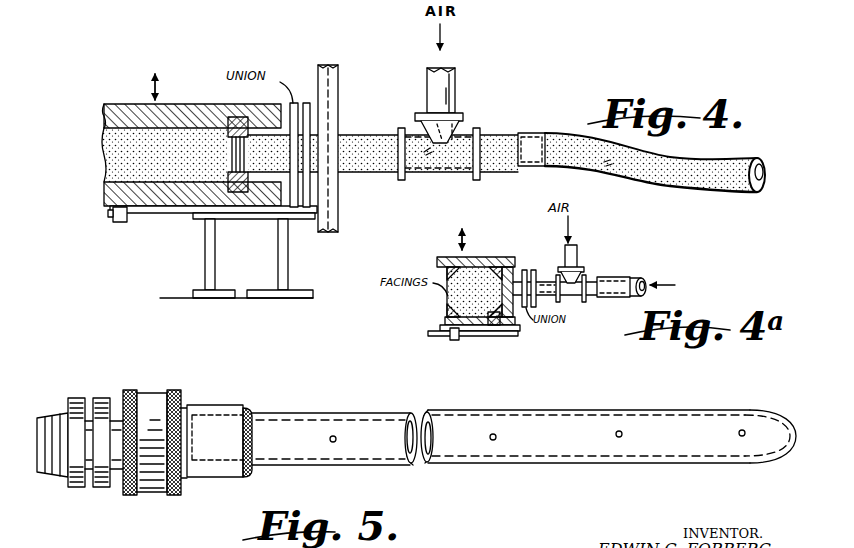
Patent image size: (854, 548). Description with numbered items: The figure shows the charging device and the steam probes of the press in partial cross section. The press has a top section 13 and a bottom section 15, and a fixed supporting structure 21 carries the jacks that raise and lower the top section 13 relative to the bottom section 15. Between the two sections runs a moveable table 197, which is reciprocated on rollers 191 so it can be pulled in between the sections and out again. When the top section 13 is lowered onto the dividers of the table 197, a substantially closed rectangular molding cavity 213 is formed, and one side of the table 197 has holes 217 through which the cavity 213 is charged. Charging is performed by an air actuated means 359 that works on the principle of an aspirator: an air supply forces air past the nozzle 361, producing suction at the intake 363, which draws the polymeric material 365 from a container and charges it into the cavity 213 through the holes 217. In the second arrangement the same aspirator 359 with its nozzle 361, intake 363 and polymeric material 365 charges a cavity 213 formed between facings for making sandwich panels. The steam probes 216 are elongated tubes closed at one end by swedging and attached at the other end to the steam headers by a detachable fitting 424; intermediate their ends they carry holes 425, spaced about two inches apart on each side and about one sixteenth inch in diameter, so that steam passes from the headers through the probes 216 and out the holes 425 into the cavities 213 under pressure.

In FIG. 4, the top section 13 is at (138, 104).
In FIG. 4A, the top section 13 is at (492, 257).
In FIG. 4, the bottom section 15 is at (108, 190).
In FIG. 4A, the bottom section 15 is at (476, 327).
In FIG. 4, the fixed supporting structure 21 is at (288, 250).
In FIG. 4, the rollers 191 is at (116, 226).
In FIG. 4A, the rollers 191 is at (451, 338).
In FIG. 4, the table 197 is at (196, 232).
In FIG. 4A, the table 197 is at (488, 334).
In FIG. 4A, the molding cavity 213 is at (447, 306).
In FIG. 4, the holes 217 is at (240, 192).
In FIG. 4A, the holes 217 is at (500, 326).
In FIG. 4, the air actuated means 359 is at (405, 60).
In FIG. 4A, the air actuated means 359 is at (584, 252).
In FIG. 4, the nozzle 361 is at (377, 143).
In FIG. 4A, the nozzle 361 is at (540, 272).
In FIG. 4, the intake 363 is at (547, 148).
In FIG. 4A, the intake 363 is at (618, 284).
In FIG. 4, the polymeric material 365 is at (672, 177).
In FIG. 4A, the polymeric material 365 is at (620, 299).
In FIG. 5, the detachable fitting 424 is at (168, 390).
In FIG. 5, the holes 425 is at (494, 441).
In FIG. 5, the steam probes 216 is at (512, 405).